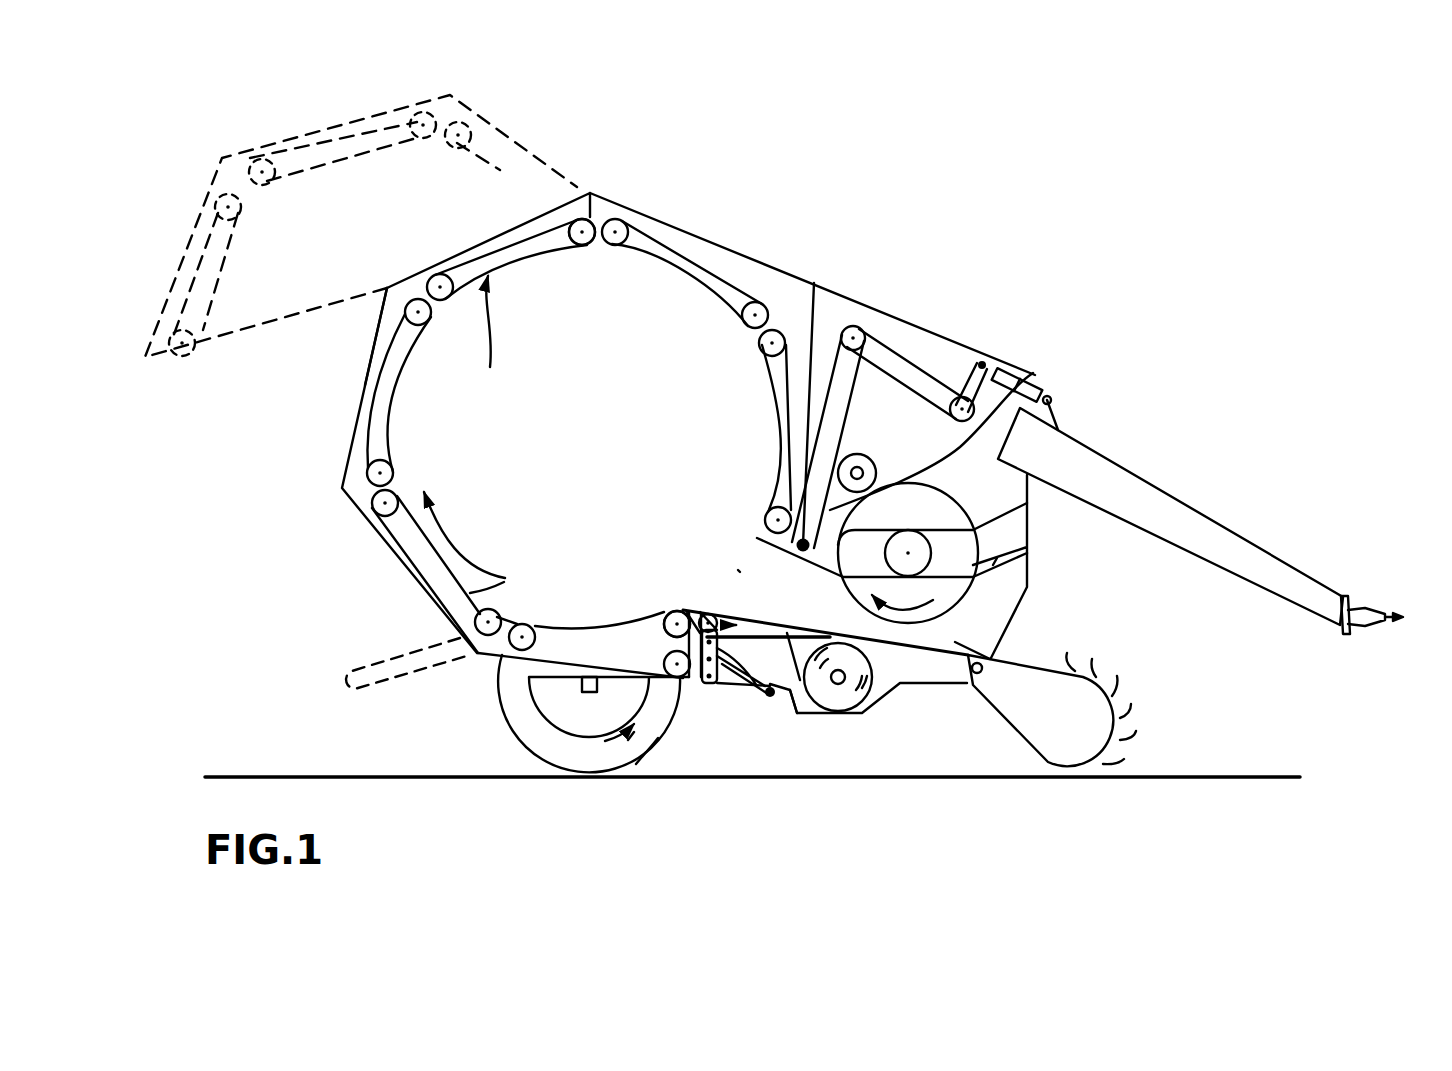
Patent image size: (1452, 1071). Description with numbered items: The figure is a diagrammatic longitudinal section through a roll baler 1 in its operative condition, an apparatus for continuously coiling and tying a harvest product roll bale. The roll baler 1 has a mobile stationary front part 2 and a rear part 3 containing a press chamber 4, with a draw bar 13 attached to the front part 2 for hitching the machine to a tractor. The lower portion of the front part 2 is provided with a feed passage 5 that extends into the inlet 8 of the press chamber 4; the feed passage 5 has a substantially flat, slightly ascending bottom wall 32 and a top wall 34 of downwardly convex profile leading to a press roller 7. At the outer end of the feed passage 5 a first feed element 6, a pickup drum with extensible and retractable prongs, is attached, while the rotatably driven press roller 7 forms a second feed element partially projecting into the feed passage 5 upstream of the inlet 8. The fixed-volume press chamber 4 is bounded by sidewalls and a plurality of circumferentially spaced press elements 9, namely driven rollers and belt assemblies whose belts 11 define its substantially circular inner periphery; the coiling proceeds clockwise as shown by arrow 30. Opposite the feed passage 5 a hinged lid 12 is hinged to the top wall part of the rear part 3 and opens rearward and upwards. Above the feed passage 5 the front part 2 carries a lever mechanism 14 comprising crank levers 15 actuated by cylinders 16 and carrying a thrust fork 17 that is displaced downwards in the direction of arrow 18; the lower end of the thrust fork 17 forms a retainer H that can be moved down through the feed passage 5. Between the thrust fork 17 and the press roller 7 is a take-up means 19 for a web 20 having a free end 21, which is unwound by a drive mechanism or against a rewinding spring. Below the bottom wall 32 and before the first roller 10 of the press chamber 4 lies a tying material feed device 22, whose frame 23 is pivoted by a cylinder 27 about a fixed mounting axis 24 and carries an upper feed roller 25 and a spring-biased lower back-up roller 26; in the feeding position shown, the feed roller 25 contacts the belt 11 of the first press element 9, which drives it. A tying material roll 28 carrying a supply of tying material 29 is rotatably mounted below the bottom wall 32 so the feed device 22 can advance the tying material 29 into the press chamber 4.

The roll baler 1 is at (334, 403).
The front part 2 is at (934, 325).
The rear part 3 is at (681, 219).
The press chamber 4 is at (440, 587).
The feed passage 5 is at (888, 628).
The first feed element 6 is at (1008, 728).
The press roller 7 is at (937, 643).
The inlet 8 is at (740, 572).
The press elements 9 is at (406, 405).
The first roller 10 is at (586, 246).
The belt 11 is at (540, 250).
The hinged lid 12 is at (362, 382).
The draw bar 13 is at (1257, 532).
The lever mechanism 14 is at (941, 374).
The crank levers 15 is at (893, 347).
The cylinders 16 is at (1013, 368).
The thrust fork 17 is at (818, 490).
The arrow 18 is at (842, 436).
The take-up means 19 is at (1033, 373).
The web 20 is at (876, 510).
The free end 21 is at (930, 552).
The tying material feed device 22 is at (683, 600).
The frame 23 is at (672, 672).
The fixed mounting axis 24 is at (708, 680).
The feed roller 25 is at (708, 614).
The back-up roller 26 is at (750, 672).
The cylinder 27 is at (776, 698).
The tying material roll 28 is at (858, 702).
The tying material 29 is at (796, 716).
The arrow 30 is at (450, 533).
The bottom wall 32 is at (955, 642).
The top wall 34 is at (993, 565).
The retainer H is at (796, 578).